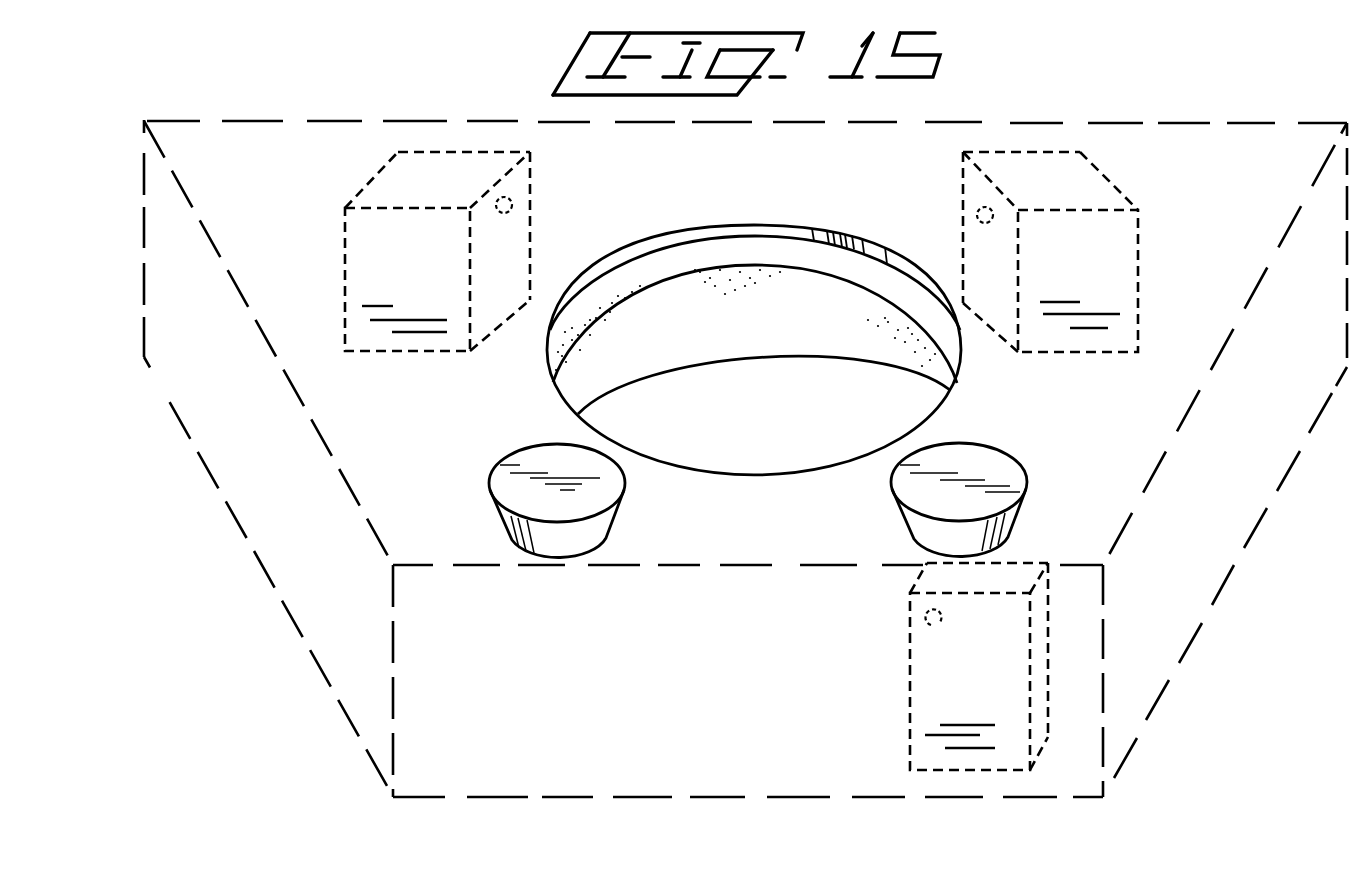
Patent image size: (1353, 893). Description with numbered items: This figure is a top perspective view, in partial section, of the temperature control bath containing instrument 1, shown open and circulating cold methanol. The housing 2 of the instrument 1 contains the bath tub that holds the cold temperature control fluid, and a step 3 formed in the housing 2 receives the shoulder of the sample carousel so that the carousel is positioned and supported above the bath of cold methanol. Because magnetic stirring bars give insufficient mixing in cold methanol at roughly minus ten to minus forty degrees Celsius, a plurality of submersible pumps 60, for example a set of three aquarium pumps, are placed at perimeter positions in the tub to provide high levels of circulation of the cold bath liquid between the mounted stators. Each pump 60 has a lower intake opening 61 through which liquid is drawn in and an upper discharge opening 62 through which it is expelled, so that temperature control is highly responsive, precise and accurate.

The instrument 1 is at (246, 88).
The housing 2 is at (743, 226).
The step 3 is at (695, 268).
The pump 60 is at (366, 187).
The lower intake opening 61 is at (403, 320).
The upper discharge opening 62 is at (511, 210).